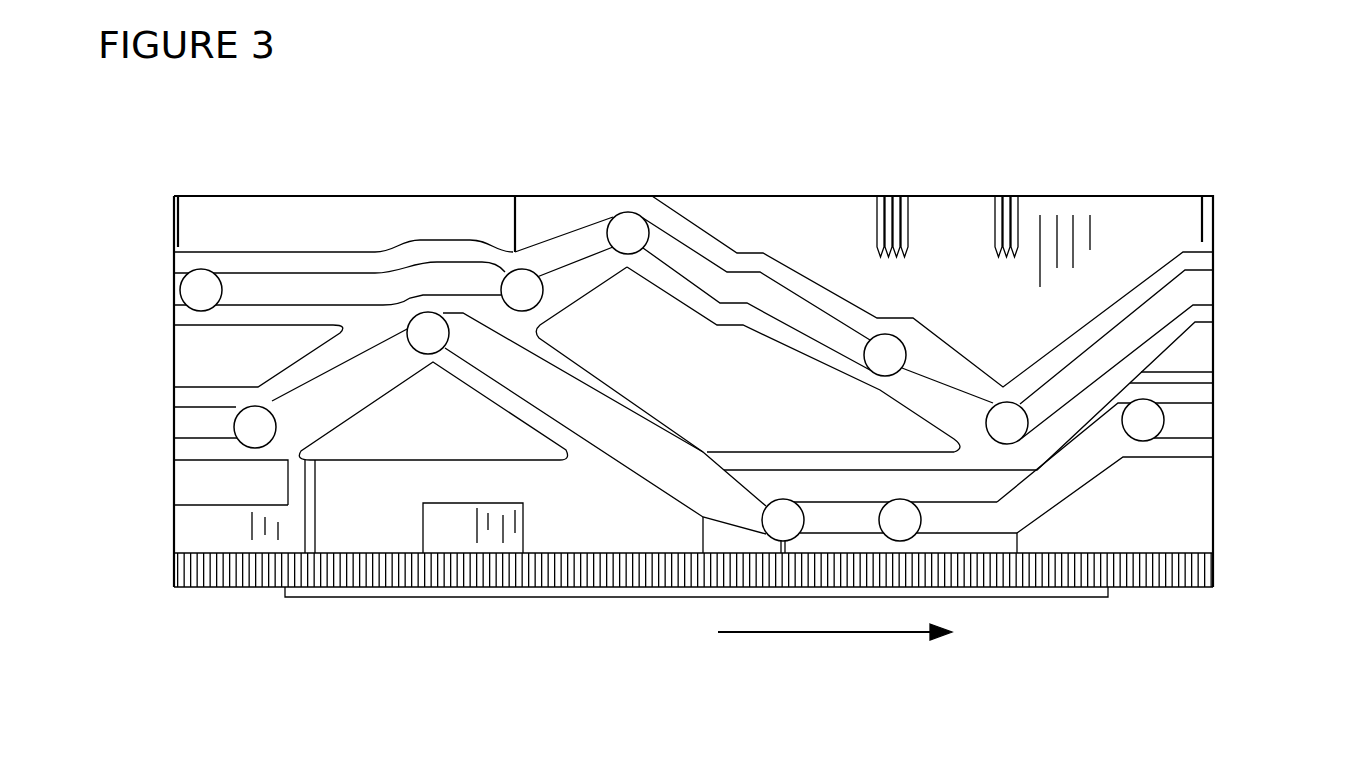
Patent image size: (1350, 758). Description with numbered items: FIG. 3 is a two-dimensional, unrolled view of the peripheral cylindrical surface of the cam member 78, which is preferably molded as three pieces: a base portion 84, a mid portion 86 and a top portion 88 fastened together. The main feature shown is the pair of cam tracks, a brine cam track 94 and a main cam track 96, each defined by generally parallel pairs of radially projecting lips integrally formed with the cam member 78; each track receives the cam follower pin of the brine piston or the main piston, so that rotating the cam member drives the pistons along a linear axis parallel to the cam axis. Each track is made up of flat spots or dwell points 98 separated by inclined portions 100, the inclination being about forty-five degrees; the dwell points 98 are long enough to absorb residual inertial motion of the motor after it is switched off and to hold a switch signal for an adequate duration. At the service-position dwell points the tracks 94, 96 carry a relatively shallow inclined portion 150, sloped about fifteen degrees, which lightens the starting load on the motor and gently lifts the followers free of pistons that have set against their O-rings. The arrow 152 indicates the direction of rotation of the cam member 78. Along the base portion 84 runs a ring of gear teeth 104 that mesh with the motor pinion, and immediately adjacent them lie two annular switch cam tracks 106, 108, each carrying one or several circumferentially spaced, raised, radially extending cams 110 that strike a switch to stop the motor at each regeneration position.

The cam member 78 is at (1082, 142).
The base portion 84 is at (1190, 530).
The mid portion 86 is at (1192, 356).
The top portion 88 is at (1185, 213).
The brine cam track 94 is at (1197, 288).
The main cam track 96 is at (1190, 420).
The dwell points 98 is at (433, 311).
The inclined portions 100 is at (790, 287).
The gear teeth 104 is at (180, 568).
The annular switch cam track 106 is at (183, 537).
The annular switch cam track 108 is at (190, 490).
The cams 110 is at (285, 477).
The shallow inclined portion 150 is at (490, 256).
The arrow 152 is at (867, 634).